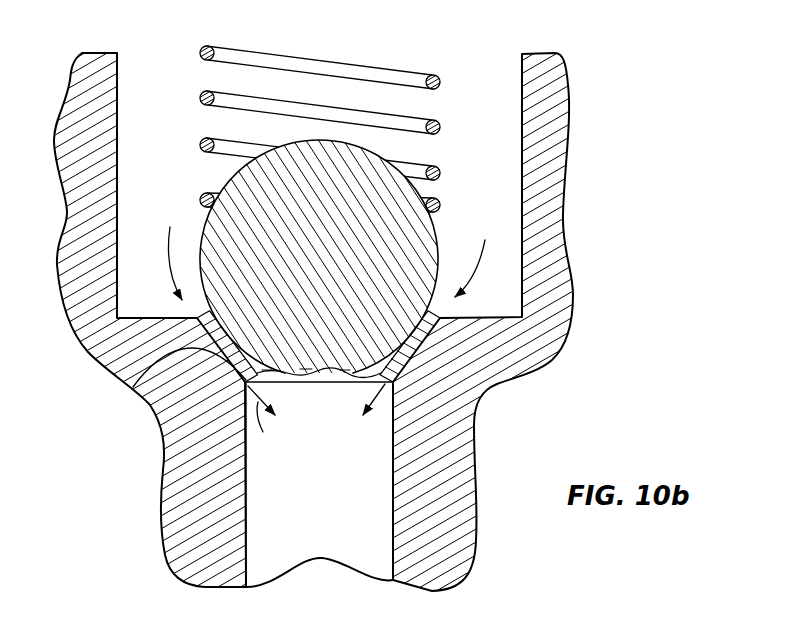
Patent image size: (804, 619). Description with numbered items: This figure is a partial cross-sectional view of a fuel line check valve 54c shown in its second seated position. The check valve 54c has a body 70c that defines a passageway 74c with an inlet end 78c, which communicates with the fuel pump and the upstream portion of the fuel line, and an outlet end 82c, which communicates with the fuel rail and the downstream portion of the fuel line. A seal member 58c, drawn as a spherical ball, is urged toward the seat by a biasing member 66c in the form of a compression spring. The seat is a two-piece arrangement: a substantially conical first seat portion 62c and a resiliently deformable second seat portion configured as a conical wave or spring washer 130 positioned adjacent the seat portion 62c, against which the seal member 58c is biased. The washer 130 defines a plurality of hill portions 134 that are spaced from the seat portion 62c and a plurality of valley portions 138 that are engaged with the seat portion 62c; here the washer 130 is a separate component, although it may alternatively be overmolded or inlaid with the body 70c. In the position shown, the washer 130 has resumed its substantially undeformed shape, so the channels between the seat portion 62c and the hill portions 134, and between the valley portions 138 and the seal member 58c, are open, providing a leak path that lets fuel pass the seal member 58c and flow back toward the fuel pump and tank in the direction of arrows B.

The check valve 54c is at (622, 65).
The body 70c is at (543, 243).
The outlet end 82c is at (117, 98).
The passageway 74c is at (524, 194).
The inlet end 78c is at (393, 448).
The biasing member 66c is at (440, 82).
The seal member 58c is at (423, 233).
The first seat portion 62c is at (425, 320).
The spring washer 130 is at (195, 338).
The hill portions 134 is at (360, 380).
The valley portions 138 is at (302, 384).